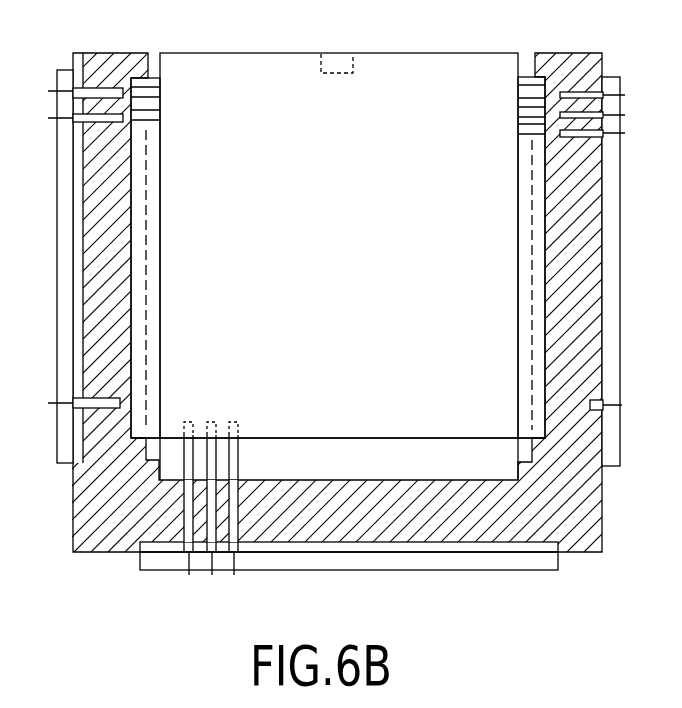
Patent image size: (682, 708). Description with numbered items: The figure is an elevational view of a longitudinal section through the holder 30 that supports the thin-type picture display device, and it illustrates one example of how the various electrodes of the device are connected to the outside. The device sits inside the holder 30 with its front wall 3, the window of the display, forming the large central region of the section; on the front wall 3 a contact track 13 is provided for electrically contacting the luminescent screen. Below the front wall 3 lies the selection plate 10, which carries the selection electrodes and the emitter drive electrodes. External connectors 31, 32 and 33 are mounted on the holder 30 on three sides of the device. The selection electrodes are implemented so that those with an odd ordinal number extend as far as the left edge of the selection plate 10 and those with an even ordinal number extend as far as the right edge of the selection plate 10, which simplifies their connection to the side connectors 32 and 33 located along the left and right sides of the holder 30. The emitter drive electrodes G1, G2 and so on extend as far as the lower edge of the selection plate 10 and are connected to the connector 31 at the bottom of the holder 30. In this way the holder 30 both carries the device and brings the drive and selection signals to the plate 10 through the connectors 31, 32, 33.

The front wall 3 is at (428, 72).
The selection plate 10 is at (492, 465).
The contact track 13 is at (342, 54).
The holder 30 is at (92, 496).
The external connector 31 is at (412, 553).
The external connector 32 is at (67, 80).
The external connector 33 is at (613, 80).
The emitter drive electrode G1 is at (187, 458).
The emitter drive electrode G2 is at (204, 472).